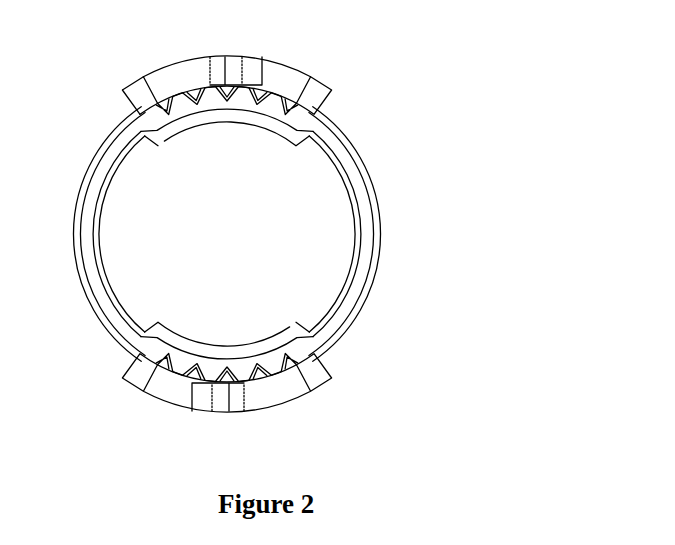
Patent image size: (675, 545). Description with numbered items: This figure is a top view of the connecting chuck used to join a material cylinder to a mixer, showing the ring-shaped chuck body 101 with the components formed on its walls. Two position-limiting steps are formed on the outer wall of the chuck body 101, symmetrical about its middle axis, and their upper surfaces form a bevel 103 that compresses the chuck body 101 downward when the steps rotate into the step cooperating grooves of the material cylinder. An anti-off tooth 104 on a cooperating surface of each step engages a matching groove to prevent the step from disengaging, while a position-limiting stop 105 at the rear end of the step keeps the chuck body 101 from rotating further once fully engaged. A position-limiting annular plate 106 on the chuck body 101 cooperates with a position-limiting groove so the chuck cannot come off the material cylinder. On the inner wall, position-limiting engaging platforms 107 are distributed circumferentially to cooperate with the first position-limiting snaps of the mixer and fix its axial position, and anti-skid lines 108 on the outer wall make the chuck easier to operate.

The chuck body 101 is at (362, 273).
The bevel 103 is at (315, 80).
The anti-off tooth 104 is at (233, 70).
The position-limiting stop 105 is at (128, 87).
The position-limiting annular plate 106 is at (383, 208).
The position-limiting engaging platform 107 is at (183, 117).
The anti-skid lines 108 is at (242, 382).